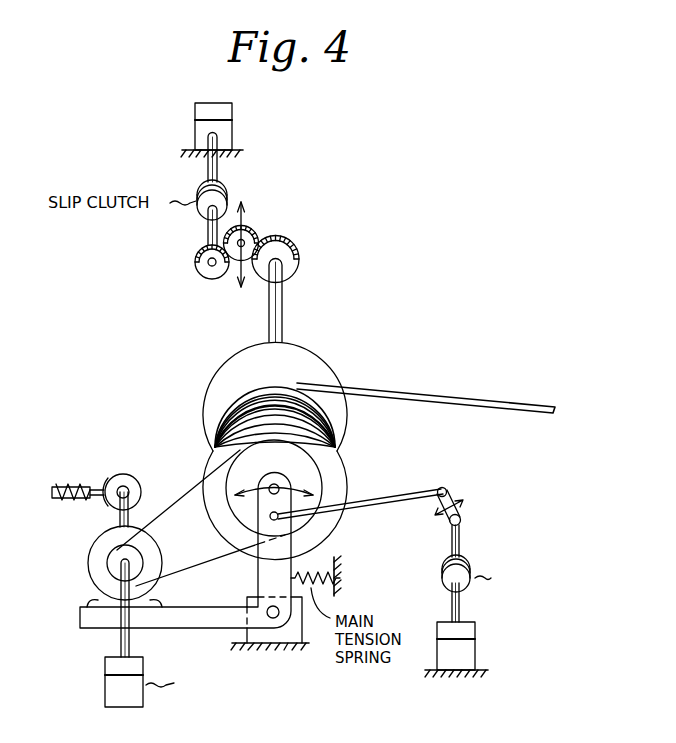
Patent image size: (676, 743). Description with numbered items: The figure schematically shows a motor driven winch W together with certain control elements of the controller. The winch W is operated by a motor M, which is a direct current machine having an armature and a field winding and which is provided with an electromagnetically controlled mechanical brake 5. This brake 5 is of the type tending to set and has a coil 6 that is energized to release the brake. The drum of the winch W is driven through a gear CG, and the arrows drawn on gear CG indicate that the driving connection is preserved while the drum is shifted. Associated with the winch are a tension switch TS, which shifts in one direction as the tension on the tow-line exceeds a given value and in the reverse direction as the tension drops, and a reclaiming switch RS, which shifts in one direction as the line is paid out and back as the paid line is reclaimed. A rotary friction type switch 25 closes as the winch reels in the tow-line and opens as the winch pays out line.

The reclaiming switch RS is at (236, 126).
The gear CG is at (256, 221).
The winch W is at (352, 432).
The motor M is at (90, 566).
The mechanical brake 5 is at (125, 474).
The coil 6 is at (72, 482).
The switch 25 is at (105, 681).
The tension switch TS is at (478, 647).